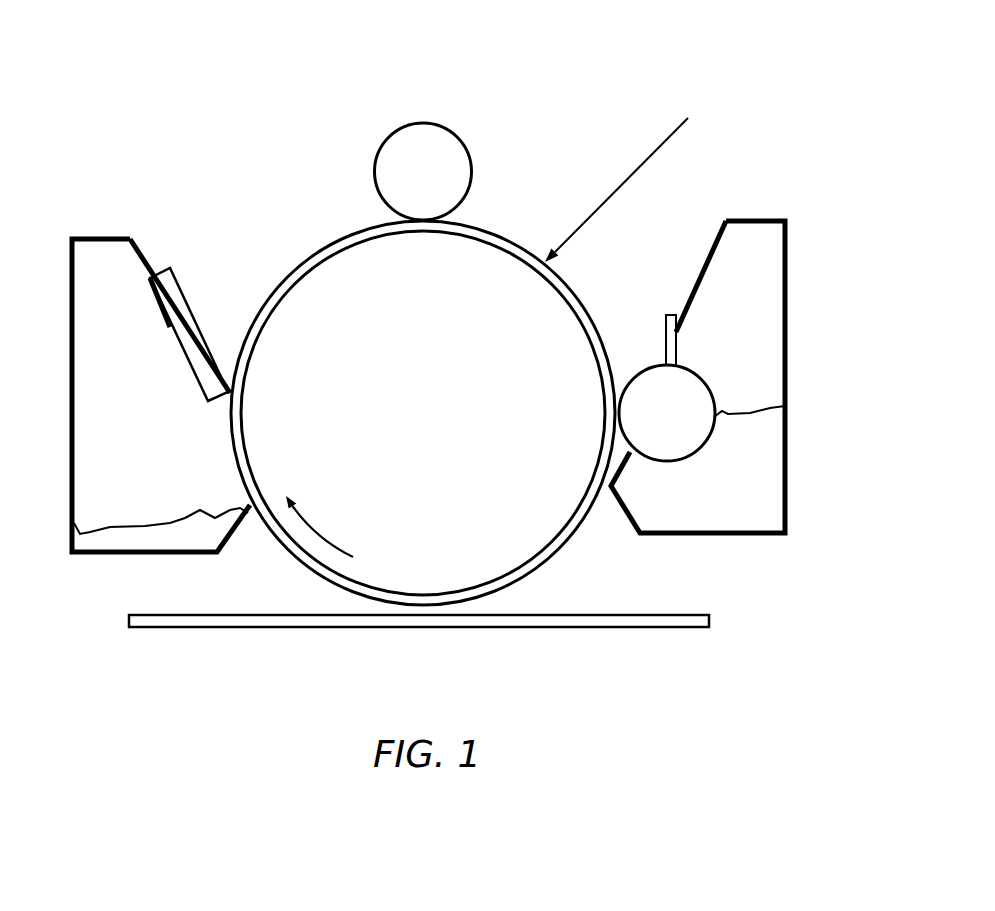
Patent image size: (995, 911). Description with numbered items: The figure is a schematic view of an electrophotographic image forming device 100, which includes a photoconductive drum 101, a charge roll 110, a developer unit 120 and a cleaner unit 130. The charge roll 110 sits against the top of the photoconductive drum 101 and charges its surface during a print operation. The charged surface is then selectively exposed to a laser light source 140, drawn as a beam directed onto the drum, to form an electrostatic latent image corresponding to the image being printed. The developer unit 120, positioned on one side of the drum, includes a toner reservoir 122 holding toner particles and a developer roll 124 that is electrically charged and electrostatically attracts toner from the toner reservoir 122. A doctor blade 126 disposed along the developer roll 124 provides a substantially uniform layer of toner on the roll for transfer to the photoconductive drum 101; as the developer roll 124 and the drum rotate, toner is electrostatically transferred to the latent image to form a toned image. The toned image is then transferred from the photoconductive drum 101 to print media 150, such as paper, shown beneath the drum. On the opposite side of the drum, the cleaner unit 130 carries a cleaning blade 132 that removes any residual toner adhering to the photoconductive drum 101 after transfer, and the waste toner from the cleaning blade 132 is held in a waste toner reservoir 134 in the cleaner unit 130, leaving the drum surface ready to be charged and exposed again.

The electrophotographic image forming device 100 is at (245, 100).
The photoconductive drum 101 is at (300, 262).
The charge roll 110 is at (450, 132).
The developer unit 120 is at (763, 221).
The toner reservoir 122 is at (752, 407).
The developer roll 124 is at (655, 363).
The doctor blade 126 is at (670, 315).
The cleaner unit 130 is at (94, 237).
The cleaning blade 132 is at (202, 325).
The waste toner reservoir 134 is at (122, 525).
The laser light source 140 is at (650, 153).
The print media 150 is at (652, 627).